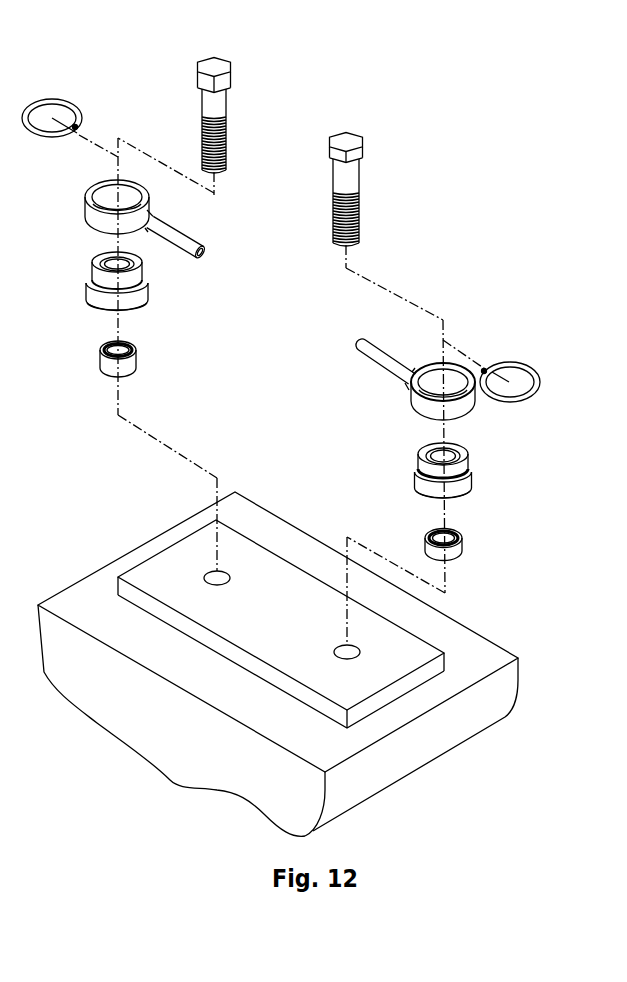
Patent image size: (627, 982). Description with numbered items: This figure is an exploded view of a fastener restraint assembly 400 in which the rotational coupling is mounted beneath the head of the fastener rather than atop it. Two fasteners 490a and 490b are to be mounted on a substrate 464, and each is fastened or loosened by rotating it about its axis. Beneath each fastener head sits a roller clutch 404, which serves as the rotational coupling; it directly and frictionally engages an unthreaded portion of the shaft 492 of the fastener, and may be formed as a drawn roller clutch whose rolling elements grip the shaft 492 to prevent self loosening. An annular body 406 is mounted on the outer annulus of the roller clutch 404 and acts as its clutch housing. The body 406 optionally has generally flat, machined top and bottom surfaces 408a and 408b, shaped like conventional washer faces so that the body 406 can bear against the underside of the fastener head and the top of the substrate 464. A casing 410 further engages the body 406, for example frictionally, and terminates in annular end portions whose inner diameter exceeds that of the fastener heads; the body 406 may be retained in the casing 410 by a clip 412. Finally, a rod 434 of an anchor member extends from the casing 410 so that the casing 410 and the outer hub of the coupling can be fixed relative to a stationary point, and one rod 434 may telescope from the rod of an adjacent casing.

The fastener restraint assembly 400 is at (455, 283).
The roller clutch 404 is at (466, 545).
The body 406 is at (494, 462).
The top surface 408a is at (460, 455).
The bottom surface 408b is at (464, 499).
The casing 410 is at (417, 403).
The clip 412 is at (533, 368).
The rod 434 is at (387, 350).
The substrate 464 is at (281, 624).
The fastener 490a is at (392, 172).
The fastener 490b is at (222, 63).
The shaft 492 is at (352, 182).